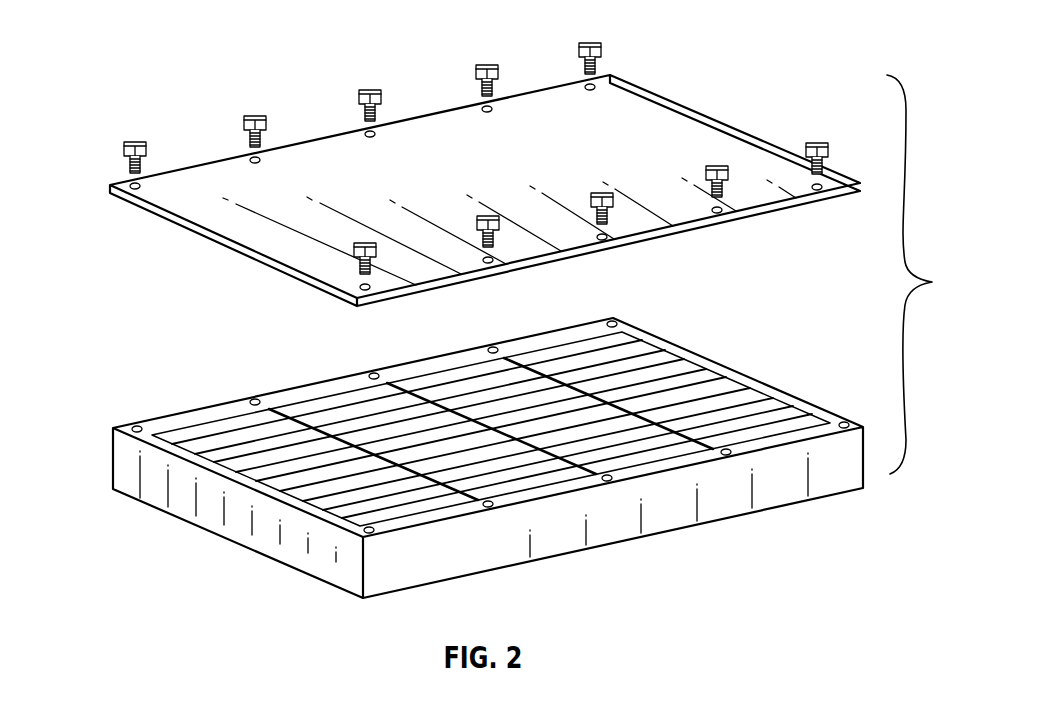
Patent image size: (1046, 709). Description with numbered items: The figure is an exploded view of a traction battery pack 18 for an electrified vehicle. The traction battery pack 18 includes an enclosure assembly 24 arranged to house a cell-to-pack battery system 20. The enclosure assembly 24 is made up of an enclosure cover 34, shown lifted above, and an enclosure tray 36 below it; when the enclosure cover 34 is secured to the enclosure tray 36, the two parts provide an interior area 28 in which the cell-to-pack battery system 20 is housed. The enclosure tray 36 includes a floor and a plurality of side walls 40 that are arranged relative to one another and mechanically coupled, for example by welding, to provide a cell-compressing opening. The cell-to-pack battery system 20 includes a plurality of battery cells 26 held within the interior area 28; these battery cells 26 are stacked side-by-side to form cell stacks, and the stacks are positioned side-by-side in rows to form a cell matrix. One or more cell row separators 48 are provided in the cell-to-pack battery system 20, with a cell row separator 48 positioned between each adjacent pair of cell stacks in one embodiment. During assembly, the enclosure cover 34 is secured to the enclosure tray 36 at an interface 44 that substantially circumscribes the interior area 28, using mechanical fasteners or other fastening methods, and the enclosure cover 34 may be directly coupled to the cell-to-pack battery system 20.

The traction battery pack 18 is at (925, 274).
The cell-to-pack battery system 20 is at (634, 366).
The enclosure assembly 24 is at (110, 207).
The battery cells 26 is at (190, 433).
The interior area 28 is at (662, 285).
The enclosure cover 34 is at (303, 176).
The enclosure tray 36 is at (110, 446).
The side walls 40 is at (283, 388).
The interface 44 is at (255, 116).
The cell row separators 48 is at (305, 418).